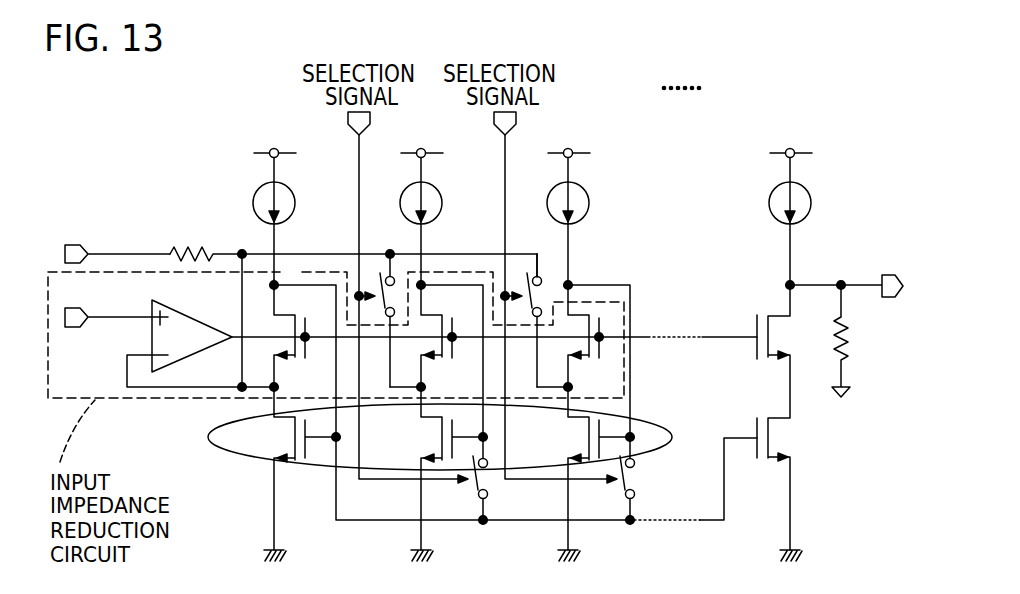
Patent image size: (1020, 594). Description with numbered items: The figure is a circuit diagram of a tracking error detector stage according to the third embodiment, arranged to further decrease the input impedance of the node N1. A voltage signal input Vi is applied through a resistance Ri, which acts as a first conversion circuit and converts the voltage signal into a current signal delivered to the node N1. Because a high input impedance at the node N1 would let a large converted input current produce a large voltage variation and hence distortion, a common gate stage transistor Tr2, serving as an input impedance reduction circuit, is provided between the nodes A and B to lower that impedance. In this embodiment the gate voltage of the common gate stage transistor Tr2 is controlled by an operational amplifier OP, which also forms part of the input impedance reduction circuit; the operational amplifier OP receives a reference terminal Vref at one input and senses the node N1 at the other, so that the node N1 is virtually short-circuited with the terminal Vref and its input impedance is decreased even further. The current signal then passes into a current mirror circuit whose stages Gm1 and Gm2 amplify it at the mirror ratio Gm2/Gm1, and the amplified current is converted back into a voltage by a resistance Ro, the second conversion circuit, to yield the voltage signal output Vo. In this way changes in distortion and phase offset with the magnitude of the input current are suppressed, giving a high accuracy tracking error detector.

The voltage signal input Vi is at (114, 240).
The resistance (first conversion circuit) Ri is at (206, 239).
The node N1 is at (383, 303).
The terminal Vref is at (111, 305).
The operational amplifier (input impedance reduction circuit) OP is at (186, 335).
The node A is at (283, 275).
The node B is at (269, 388).
The common gate stage transistor (input impedance reduction circuit) Tr2 is at (439, 336).
The current mirror input stage Gm1 is at (437, 474).
The current mirror output stage Gm2 is at (798, 421).
The resistance (second conversion circuit) Ro is at (854, 341).
The voltage signal output Vo is at (846, 272).